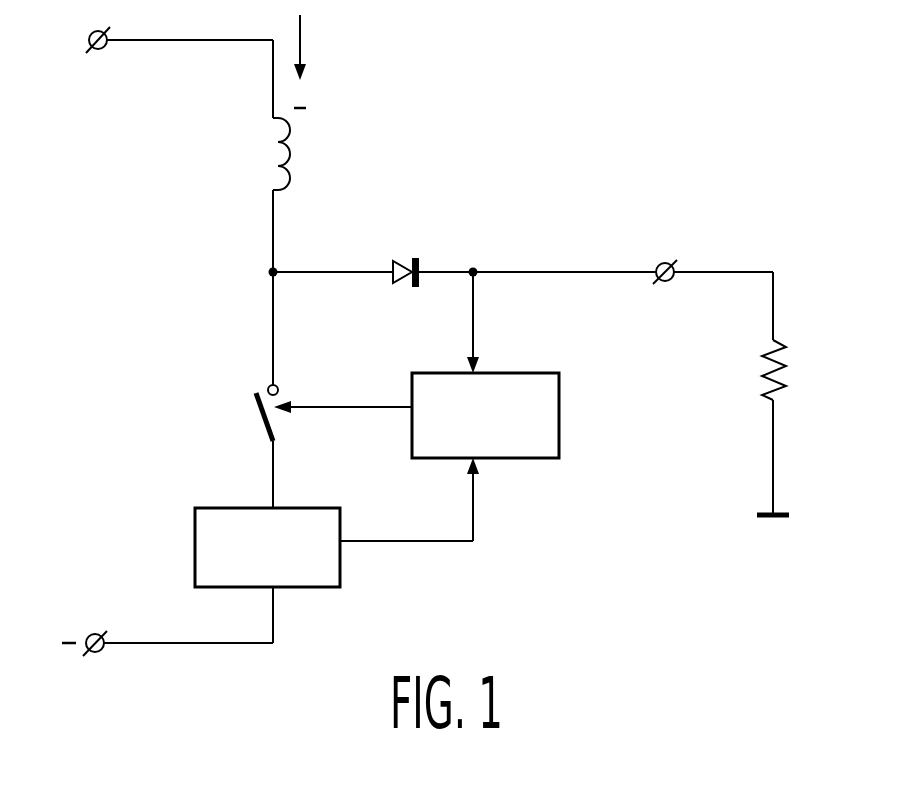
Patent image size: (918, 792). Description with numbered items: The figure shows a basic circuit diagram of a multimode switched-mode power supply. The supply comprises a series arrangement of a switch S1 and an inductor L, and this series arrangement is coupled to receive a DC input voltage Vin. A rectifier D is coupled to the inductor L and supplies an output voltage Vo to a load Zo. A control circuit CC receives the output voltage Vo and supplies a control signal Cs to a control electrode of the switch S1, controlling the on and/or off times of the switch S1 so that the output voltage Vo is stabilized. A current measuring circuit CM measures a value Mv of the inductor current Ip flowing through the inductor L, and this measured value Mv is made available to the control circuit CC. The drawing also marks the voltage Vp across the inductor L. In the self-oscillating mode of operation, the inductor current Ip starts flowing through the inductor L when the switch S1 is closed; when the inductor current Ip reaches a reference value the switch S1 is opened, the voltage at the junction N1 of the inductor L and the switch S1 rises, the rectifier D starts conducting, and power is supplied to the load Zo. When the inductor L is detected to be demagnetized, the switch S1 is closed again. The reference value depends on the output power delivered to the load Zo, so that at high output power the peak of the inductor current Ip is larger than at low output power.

The inductor L is at (261, 154).
The rectifier D is at (397, 262).
The switch S1 is at (251, 446).
The control circuit CC is at (559, 390).
The current measuring circuit CM is at (195, 531).
The load Zo is at (791, 427).
The junction N1 is at (313, 287).
The DC input voltage Vin is at (159, 339).
The output voltage Vo is at (708, 281).
The inductor current Ip is at (316, 47).
The inductor voltage Vp is at (311, 162).
The control signal Cs is at (343, 395).
The value of the inductor current Mv is at (409, 524).